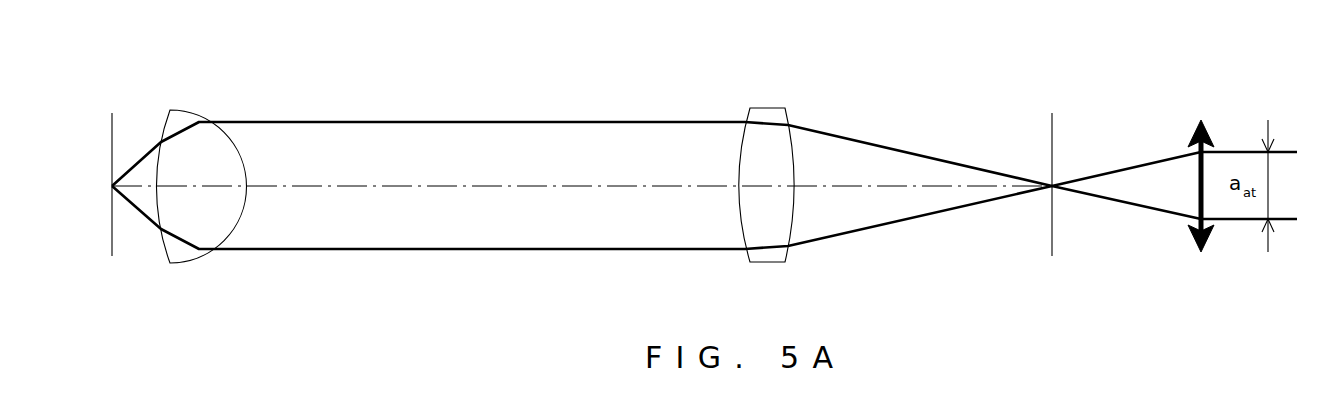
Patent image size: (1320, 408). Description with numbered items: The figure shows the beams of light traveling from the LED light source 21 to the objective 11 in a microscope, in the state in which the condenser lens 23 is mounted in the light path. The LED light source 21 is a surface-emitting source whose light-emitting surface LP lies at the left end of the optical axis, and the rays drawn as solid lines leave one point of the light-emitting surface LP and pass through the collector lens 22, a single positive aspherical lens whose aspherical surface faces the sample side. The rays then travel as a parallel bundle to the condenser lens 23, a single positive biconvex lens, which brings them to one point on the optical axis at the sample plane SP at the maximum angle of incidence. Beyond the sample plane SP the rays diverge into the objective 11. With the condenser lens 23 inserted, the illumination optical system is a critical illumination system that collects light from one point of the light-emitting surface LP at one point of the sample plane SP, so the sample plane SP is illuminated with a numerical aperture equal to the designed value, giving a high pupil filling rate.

The objective 11 is at (1198, 176).
The LED light source 21 is at (110, 197).
The collector lens 22 is at (200, 145).
The condenser lens 23 is at (765, 135).
The light-emitting surface LP is at (112, 130).
The sample plane SP is at (1052, 143).